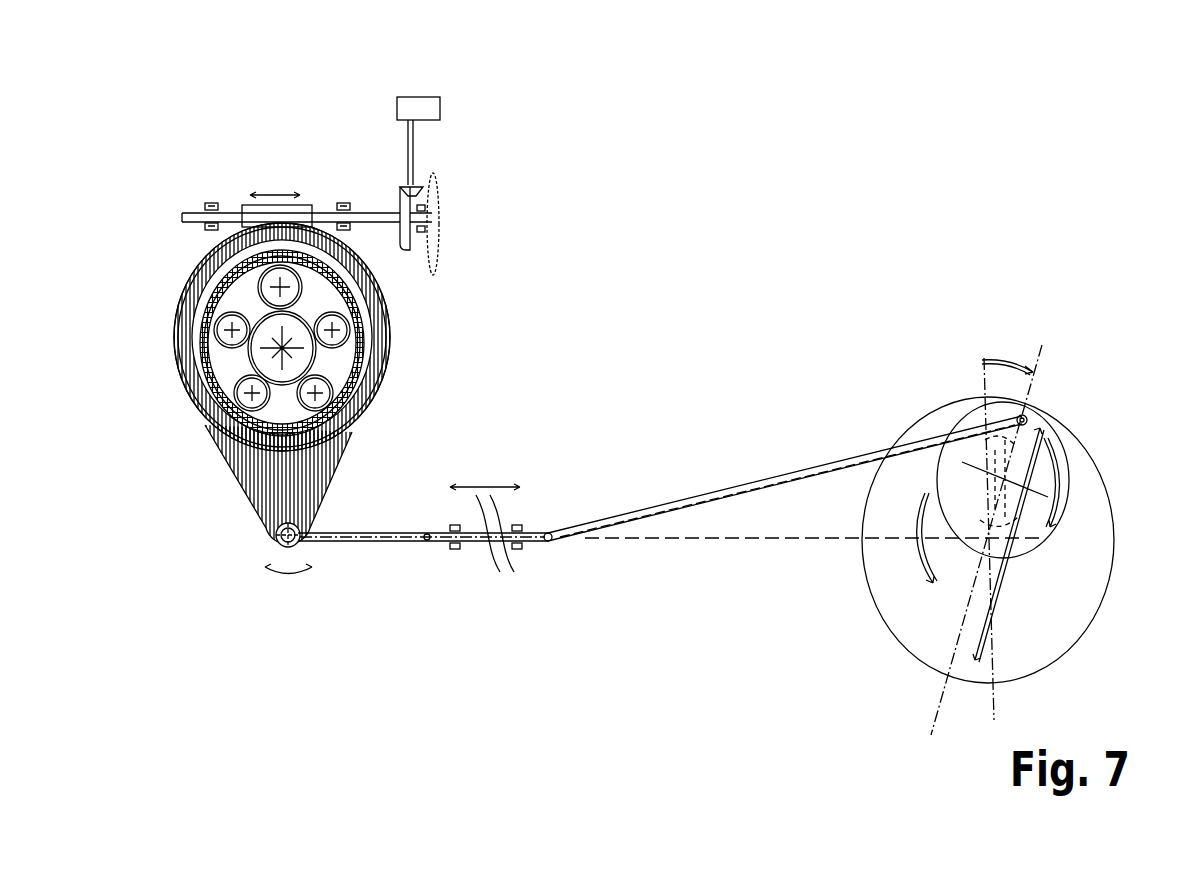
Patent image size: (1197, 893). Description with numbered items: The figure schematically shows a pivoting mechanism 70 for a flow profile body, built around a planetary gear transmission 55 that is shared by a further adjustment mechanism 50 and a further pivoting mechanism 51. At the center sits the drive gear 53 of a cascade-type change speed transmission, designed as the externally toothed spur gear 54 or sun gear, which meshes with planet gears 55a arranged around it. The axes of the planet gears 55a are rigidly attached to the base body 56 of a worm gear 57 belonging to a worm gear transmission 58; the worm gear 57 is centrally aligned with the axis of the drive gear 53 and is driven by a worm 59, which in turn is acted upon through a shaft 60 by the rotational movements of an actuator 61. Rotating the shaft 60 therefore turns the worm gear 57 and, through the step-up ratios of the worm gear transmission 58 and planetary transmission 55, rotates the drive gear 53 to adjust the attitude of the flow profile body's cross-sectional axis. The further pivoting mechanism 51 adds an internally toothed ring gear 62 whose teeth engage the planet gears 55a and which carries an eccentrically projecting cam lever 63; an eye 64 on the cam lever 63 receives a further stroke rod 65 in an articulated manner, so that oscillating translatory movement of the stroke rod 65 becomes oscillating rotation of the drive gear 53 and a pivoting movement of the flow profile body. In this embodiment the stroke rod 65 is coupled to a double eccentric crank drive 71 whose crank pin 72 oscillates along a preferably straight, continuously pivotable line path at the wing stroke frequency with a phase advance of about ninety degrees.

The further adjustment mechanism 50 is at (187, 172).
The further pivoting mechanism 51 is at (373, 552).
The drive gear 53 is at (218, 405).
The spur gear 54 is at (302, 357).
The planetary gear transmission 55 is at (372, 416).
The planet gears 55a is at (322, 330).
The base body 56 is at (175, 283).
The worm gear 57 is at (187, 376).
The worm gear transmission 58 is at (282, 163).
The worm 59 is at (245, 202).
The shaft 60 is at (358, 217).
The actuator 61 is at (413, 112).
The internally toothed ring gear 62 is at (197, 350).
The cam lever 63 is at (257, 507).
The eye 64 is at (275, 547).
The further stroke rod 65 is at (410, 540).
The pivoting mechanism 70 is at (812, 405).
The double eccentric crank drive 71 is at (907, 538).
The crank pin 72 is at (1027, 418).